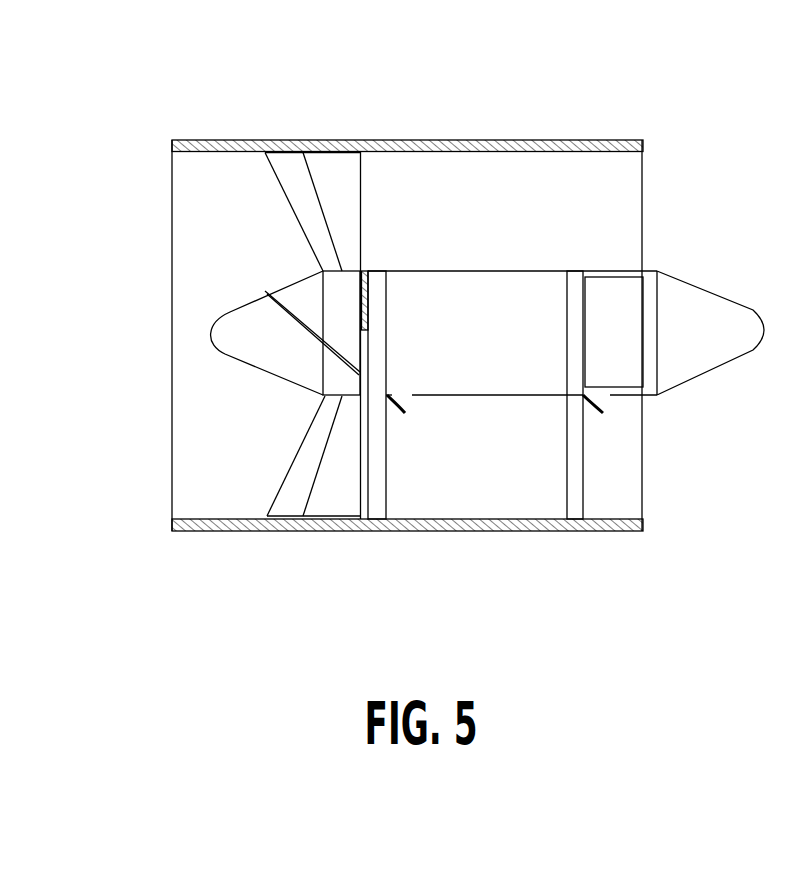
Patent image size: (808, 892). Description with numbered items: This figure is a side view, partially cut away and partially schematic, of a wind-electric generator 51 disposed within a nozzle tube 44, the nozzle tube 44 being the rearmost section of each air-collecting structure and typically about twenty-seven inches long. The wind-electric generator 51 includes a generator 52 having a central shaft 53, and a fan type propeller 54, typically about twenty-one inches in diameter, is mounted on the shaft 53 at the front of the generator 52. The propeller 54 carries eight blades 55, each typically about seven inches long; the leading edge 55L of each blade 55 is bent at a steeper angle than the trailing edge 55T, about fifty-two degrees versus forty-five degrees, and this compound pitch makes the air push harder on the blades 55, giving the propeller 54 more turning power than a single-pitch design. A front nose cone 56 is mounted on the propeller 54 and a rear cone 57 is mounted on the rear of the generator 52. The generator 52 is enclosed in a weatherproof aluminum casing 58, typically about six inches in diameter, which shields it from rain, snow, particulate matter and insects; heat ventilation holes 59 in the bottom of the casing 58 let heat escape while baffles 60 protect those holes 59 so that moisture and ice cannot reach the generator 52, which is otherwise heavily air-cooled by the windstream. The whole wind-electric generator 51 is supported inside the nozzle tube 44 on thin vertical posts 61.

The nozzle tube 44 is at (403, 139).
The wind-electric generator 51 is at (538, 252).
The generator 52 is at (493, 284).
The central shaft 53 is at (363, 330).
The fan type propeller 54 is at (337, 150).
The blades 55 is at (292, 520).
The leading edge 55L is at (265, 292).
The trailing edge 55T is at (320, 325).
The front nose cone 56 is at (220, 338).
The rear cone 57 is at (753, 327).
The weatherproof aluminum casing 58 is at (615, 263).
The heat ventilation holes 59 is at (403, 393).
The baffles 60 is at (587, 396).
The thin vertical posts 61 is at (568, 497).